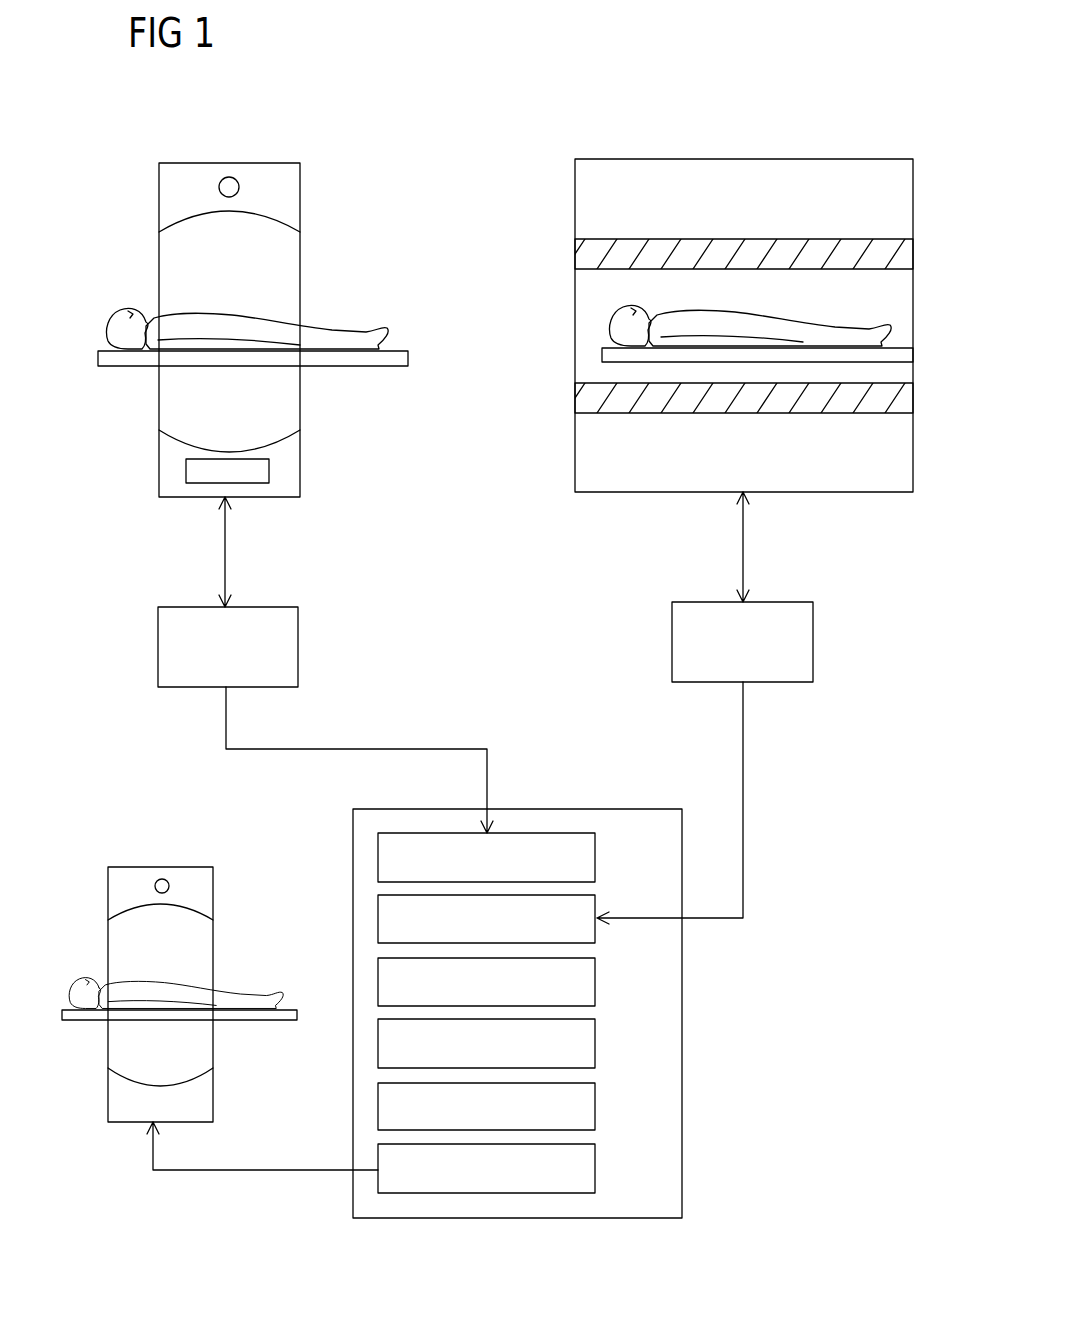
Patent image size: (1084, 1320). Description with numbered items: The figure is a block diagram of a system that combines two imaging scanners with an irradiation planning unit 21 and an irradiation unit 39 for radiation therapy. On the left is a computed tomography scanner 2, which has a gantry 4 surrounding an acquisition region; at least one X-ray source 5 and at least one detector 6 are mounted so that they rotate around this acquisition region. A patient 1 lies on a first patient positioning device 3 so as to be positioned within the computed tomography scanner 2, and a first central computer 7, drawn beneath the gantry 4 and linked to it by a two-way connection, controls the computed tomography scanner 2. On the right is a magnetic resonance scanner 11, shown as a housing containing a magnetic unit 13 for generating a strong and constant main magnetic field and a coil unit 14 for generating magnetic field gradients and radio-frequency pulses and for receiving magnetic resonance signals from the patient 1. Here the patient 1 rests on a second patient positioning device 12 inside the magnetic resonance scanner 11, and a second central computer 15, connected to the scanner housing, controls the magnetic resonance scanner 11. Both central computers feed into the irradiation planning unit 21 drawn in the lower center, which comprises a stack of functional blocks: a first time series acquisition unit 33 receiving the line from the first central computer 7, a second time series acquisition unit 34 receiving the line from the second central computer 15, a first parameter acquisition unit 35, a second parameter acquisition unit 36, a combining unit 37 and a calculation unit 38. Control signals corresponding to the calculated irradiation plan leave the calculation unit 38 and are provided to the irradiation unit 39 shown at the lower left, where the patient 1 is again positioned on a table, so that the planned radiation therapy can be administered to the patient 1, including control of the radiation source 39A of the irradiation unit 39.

The patient 1 is at (227, 330).
The computed tomography scanner 2 is at (251, 280).
The first patient positioning device 3 is at (400, 347).
The gantry 4 is at (300, 193).
The X-ray source 5 is at (238, 181).
The detector 6 is at (269, 467).
The first central computer 7 is at (298, 650).
The magnetic resonance scanner 11 is at (726, 275).
The second patient positioning device 12 is at (895, 348).
The magnetic unit 13 is at (575, 200).
The coil unit 14 is at (575, 255).
The second central computer 15 is at (813, 644).
The irradiation planning unit 21 is at (548, 808).
The first time series acquisition unit 33 is at (378, 858).
The second time series acquisition unit 34 is at (378, 920).
The first parameter acquisition unit 35 is at (378, 982).
The second parameter acquisition unit 36 is at (378, 1044).
The combining unit 37 is at (378, 1107).
The calculation unit 38 is at (597, 1165).
The irradiation unit 39 is at (179, 952).
The radiation source 39A is at (172, 878).